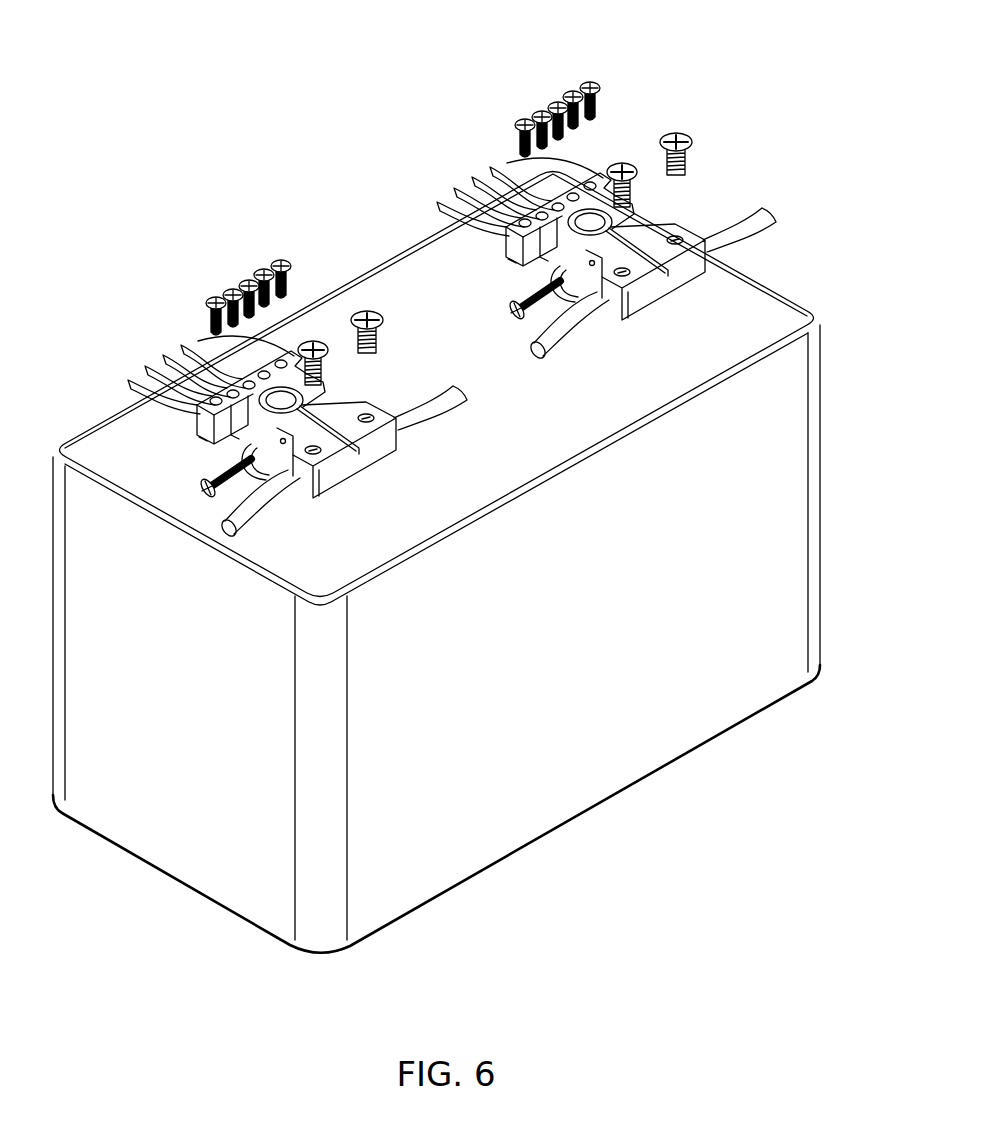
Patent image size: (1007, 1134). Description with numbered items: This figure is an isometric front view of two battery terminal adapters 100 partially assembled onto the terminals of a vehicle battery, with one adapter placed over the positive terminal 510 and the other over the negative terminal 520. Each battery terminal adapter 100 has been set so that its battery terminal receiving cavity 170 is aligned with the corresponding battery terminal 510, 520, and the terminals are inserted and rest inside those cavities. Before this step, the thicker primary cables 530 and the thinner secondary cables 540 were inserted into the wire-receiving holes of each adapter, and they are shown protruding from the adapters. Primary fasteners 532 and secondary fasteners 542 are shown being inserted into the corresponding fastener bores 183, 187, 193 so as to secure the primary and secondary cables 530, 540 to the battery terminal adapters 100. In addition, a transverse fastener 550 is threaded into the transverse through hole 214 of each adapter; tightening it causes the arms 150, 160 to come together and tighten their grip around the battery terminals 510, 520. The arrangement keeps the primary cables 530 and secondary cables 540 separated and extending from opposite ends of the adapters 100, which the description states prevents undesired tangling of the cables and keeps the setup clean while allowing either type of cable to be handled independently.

The battery terminal adapter 100 is at (388, 539).
The arm 150 is at (362, 434).
The arm 160 is at (411, 497).
The battery terminal receiving cavity 170 is at (341, 379).
The fastener bore 183 is at (363, 489).
The fastener bore 187 is at (415, 456).
The fastener bore 193 is at (214, 405).
The transverse through hole 214 is at (232, 481).
The positive terminal 510 is at (503, 229).
The negative terminal 520 is at (315, 371).
The primary cable 530 is at (376, 470).
The primary fastener 532 is at (340, 297).
The secondary cable 540 is at (196, 350).
The secondary fastener 542 is at (232, 282).
The transverse fastener 550 is at (167, 496).